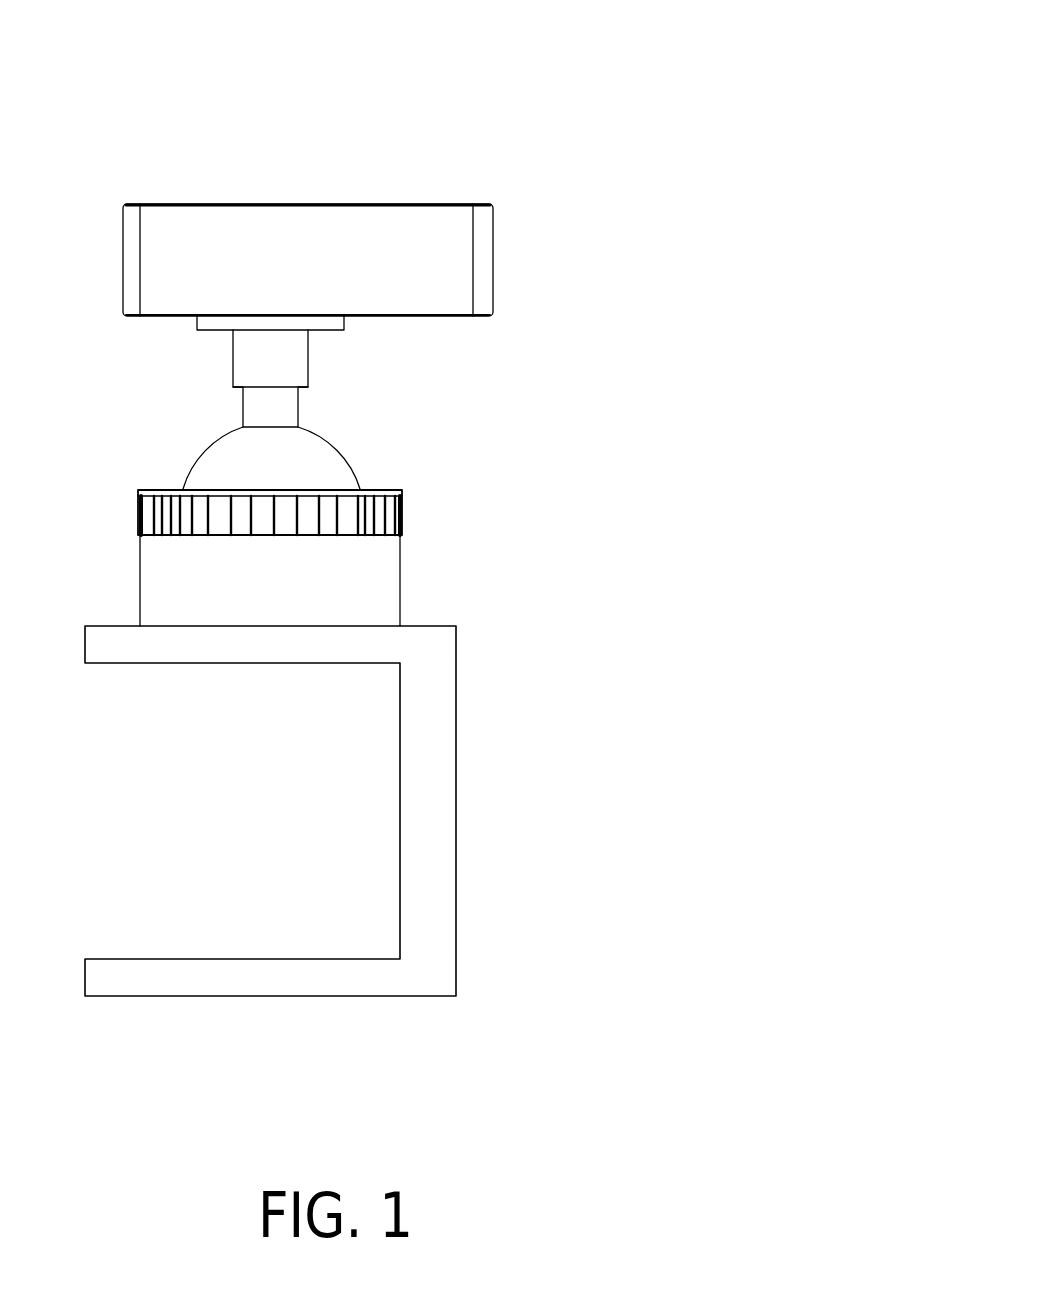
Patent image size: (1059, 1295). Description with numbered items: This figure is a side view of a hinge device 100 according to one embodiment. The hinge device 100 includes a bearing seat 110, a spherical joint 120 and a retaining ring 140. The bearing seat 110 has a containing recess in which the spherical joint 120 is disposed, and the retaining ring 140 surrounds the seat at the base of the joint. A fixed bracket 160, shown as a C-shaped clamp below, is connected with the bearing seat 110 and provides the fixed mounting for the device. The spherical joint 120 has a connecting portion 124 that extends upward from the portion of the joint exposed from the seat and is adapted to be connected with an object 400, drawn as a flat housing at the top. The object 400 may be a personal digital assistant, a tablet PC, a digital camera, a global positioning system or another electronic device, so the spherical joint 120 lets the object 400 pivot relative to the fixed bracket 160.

The hinge device 100 is at (596, 107).
The object 400 is at (403, 233).
The connecting portion 124 is at (273, 363).
The spherical joint 120 is at (313, 465).
The retaining ring 140 is at (355, 515).
The bearing seat 110 is at (340, 582).
The fixed bracket 160 is at (427, 813).